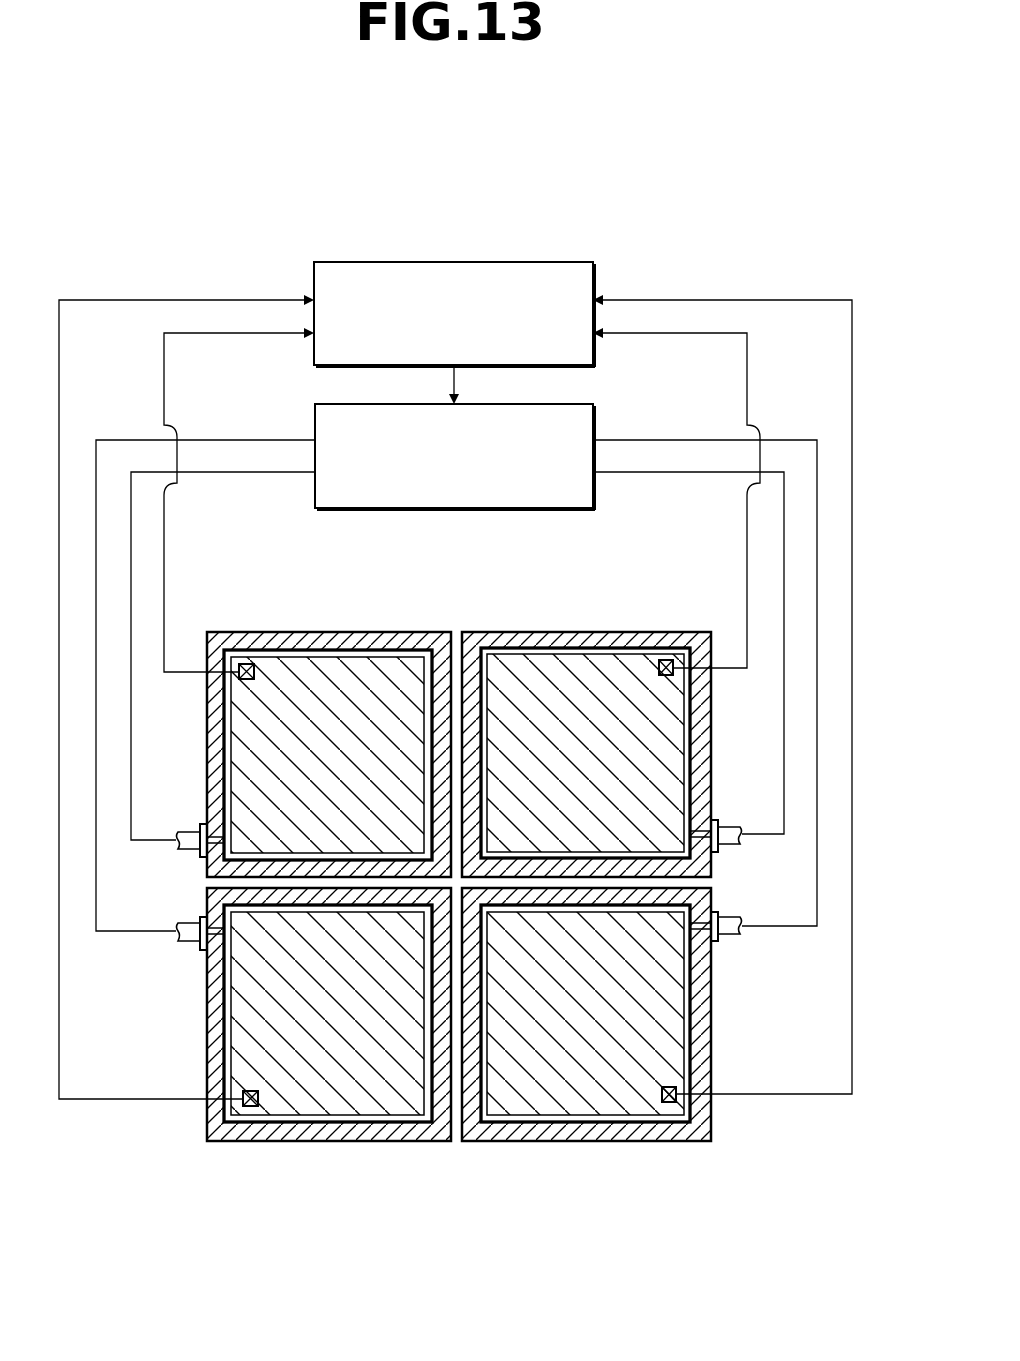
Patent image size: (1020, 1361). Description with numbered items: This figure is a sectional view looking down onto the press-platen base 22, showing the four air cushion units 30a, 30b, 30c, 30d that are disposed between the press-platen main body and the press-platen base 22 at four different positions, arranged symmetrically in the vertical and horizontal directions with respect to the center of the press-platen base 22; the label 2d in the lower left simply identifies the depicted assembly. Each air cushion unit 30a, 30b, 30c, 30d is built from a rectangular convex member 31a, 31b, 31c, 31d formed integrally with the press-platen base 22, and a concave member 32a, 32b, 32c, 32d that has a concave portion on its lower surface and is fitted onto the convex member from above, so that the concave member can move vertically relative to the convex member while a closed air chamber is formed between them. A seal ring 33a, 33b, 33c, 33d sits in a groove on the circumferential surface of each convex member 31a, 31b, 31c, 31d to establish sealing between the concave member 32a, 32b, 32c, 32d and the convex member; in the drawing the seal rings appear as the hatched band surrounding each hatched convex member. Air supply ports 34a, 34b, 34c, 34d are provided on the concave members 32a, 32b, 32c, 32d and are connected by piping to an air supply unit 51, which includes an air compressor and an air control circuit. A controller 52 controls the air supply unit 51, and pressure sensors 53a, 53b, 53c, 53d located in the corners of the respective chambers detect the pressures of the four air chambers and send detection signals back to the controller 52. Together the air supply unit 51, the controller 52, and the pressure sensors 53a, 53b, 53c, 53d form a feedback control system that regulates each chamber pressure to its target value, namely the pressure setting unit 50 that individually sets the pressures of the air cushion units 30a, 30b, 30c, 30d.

The head unit 2d is at (186, 1254).
The press-platen base 22 is at (452, 1141).
The air cushion unit 30a is at (324, 1154).
The air cushion unit 30b is at (625, 1156).
The air cushion unit 30c is at (600, 622).
The air cushion unit 30d is at (353, 622).
The convex member 31a is at (380, 1141).
The convex member 31b is at (560, 1141).
The convex member 31c is at (538, 648).
The convex member 31d is at (285, 650).
The concave member 32a is at (260, 1141).
The concave member 32b is at (678, 1141).
The concave member 32c is at (680, 632).
The concave member 32d is at (418, 632).
The seal ring 33a is at (207, 1017).
The seal ring 33b is at (710, 1030).
The seal ring 33c is at (698, 748).
The seal ring 33d is at (207, 785).
The air supply port 34a is at (190, 945).
The air supply port 34b is at (727, 940).
The air supply port 34c is at (727, 850).
The air supply port 34d is at (190, 852).
The pressure setting unit 50 is at (650, 246).
The air supply unit 51 is at (593, 417).
The controller 52 is at (546, 262).
The pressure sensor 53a is at (245, 1091).
The pressure sensor 53b is at (668, 1087).
The pressure sensor 53c is at (661, 660).
The pressure sensor 53d is at (241, 664).